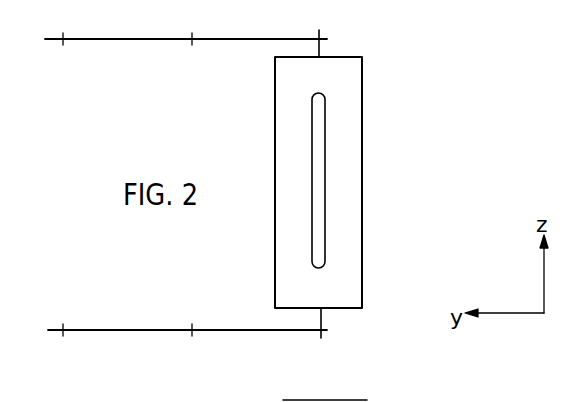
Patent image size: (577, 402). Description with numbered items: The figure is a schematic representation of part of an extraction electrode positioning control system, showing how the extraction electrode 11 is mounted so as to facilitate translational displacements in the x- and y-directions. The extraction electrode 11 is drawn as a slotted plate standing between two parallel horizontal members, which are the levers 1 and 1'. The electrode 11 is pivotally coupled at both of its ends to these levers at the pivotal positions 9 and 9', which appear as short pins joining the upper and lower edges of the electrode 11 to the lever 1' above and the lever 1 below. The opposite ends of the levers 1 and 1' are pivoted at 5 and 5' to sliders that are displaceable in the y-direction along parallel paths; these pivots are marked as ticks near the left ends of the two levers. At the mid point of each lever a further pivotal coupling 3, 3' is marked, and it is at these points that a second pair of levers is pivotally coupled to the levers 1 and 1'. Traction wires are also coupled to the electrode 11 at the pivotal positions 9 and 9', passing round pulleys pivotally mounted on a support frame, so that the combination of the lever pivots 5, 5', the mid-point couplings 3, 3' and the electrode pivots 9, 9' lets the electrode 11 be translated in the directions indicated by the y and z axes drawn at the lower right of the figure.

The lever 1 is at (187, 305).
The lever 1' is at (186, 59).
The pivotal coupling 3 is at (207, 308).
The pivotal coupling 3' is at (204, 57).
The pivot 5 is at (78, 308).
The pivot 5' is at (80, 57).
The pivotal position 9 is at (342, 331).
The pivotal position 9' is at (346, 37).
The extraction electrode 11 is at (362, 193).